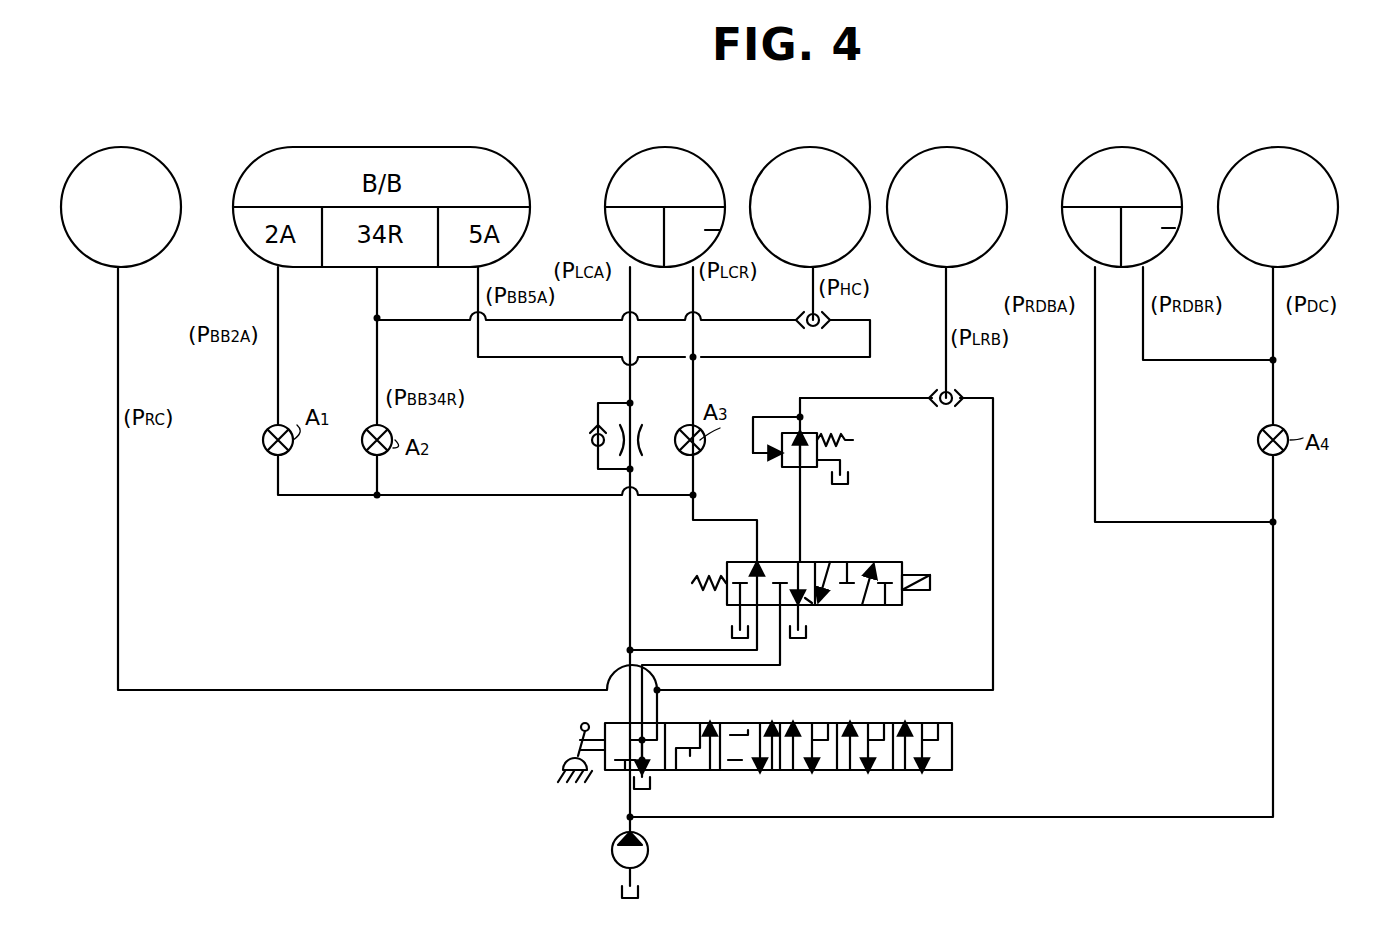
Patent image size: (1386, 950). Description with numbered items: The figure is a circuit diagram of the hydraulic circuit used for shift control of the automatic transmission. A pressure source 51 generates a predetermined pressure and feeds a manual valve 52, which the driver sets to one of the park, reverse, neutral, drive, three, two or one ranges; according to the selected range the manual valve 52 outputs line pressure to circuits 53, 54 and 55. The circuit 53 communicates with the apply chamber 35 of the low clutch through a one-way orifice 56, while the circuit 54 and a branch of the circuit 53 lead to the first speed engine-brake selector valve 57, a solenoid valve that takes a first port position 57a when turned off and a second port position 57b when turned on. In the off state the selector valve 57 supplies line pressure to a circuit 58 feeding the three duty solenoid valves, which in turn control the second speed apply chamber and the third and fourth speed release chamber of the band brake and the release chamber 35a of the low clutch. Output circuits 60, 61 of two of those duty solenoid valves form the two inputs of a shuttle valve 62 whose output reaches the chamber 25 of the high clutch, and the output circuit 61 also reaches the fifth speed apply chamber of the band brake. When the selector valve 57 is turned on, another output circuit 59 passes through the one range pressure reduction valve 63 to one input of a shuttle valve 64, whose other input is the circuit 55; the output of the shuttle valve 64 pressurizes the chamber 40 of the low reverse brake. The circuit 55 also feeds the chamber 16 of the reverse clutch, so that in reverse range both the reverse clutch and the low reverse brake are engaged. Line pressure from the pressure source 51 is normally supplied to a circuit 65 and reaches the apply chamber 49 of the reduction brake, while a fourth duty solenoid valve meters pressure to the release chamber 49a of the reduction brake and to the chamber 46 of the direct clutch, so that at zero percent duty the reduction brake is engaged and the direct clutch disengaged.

The chamber of the reverse clutch R/C 16 is at (178, 176).
The chamber of the high clutch H/C 25 is at (853, 186).
The apply chamber of the low clutch L/C 35 is at (617, 228).
The release chamber of the low clutch L/C 35a is at (713, 230).
The chamber of the low reverse brake LR/B 40 is at (995, 192).
The chamber of the direct clutch D/C 46 is at (1325, 186).
The apply chamber of the reduction brake RD/B 49 is at (1075, 248).
The release chamber of the reduction brake RD/B 49a is at (1165, 227).
The pressure source 51 is at (648, 852).
The manual valve 52 is at (955, 750).
The circuit 53 is at (650, 648).
The circuit 54 is at (783, 665).
The circuit 55 is at (910, 690).
The one-way orifice 56 is at (625, 450).
The first speed engine-brake selector valve 57 is at (869, 583).
The first port position 57a is at (805, 598).
The second port position 57b is at (893, 566).
The circuit 58 is at (757, 535).
The output circuit 59 is at (800, 518).
The output circuit 60 is at (377, 350).
The output circuit 61 is at (693, 378).
The shuttle valve 62 is at (818, 330).
The 1 range pressure reduction valve 63 is at (815, 430).
The shuttle valve 64 is at (948, 408).
The circuit 65 is at (1197, 815).